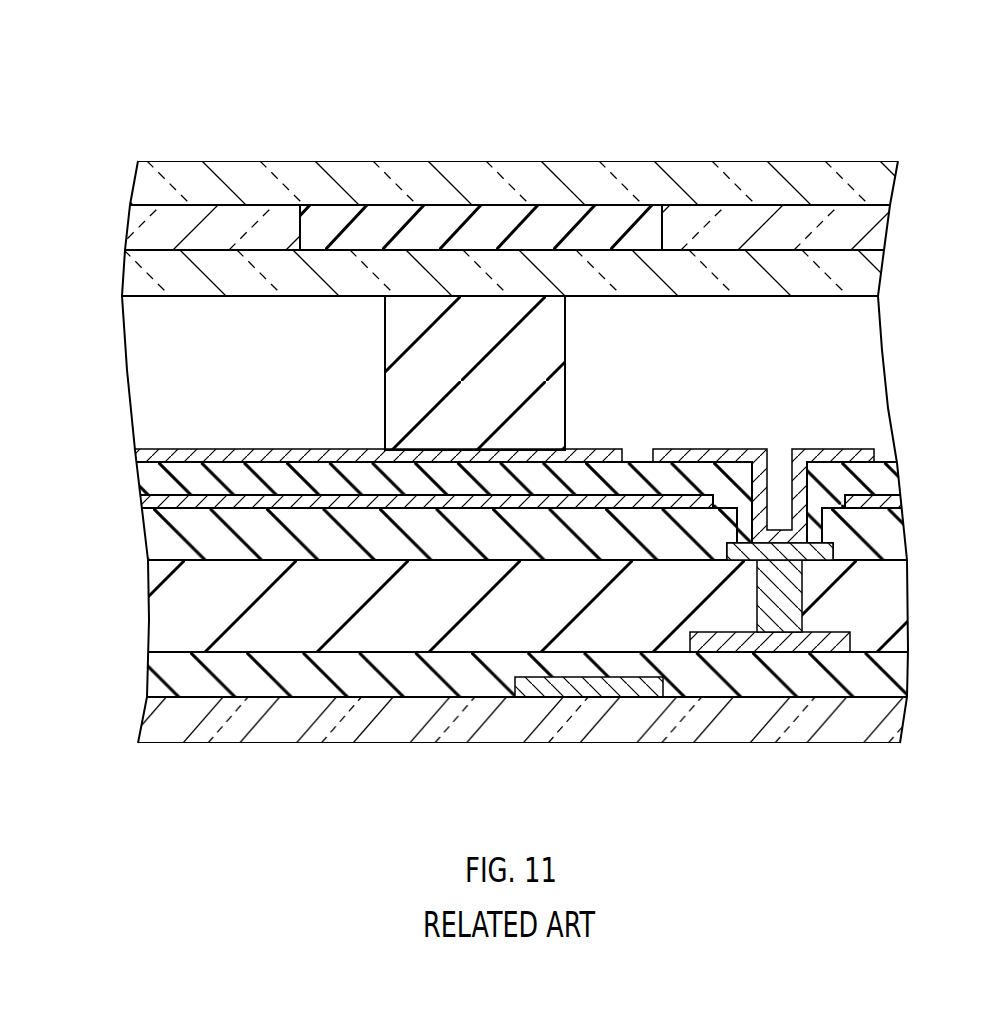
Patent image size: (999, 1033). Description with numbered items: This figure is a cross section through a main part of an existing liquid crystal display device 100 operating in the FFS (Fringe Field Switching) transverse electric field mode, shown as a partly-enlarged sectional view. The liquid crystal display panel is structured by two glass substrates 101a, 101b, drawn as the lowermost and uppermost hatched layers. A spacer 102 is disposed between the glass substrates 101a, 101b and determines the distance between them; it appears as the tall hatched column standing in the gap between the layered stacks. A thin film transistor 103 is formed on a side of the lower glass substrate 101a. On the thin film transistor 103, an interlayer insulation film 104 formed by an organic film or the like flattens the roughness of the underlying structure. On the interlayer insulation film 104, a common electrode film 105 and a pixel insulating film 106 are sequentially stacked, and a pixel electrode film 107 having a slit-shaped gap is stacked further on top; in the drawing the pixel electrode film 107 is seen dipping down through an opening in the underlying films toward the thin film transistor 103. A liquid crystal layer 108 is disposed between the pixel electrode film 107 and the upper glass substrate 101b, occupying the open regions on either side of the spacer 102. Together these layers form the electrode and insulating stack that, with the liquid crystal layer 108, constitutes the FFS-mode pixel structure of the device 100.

The liquid crystal display device 100 is at (898, 99).
The glass substrate 101a is at (878, 722).
The glass substrate 101b is at (877, 190).
The spacer 102 is at (413, 316).
The thin film transistor 103 is at (780, 671).
The interlayer insulation film 104 is at (152, 536).
The common electrode film 105 is at (146, 501).
The pixel insulating film 106 is at (147, 474).
The pixel electrode film 107 is at (140, 453).
The liquid crystal layer 108 is at (132, 348).